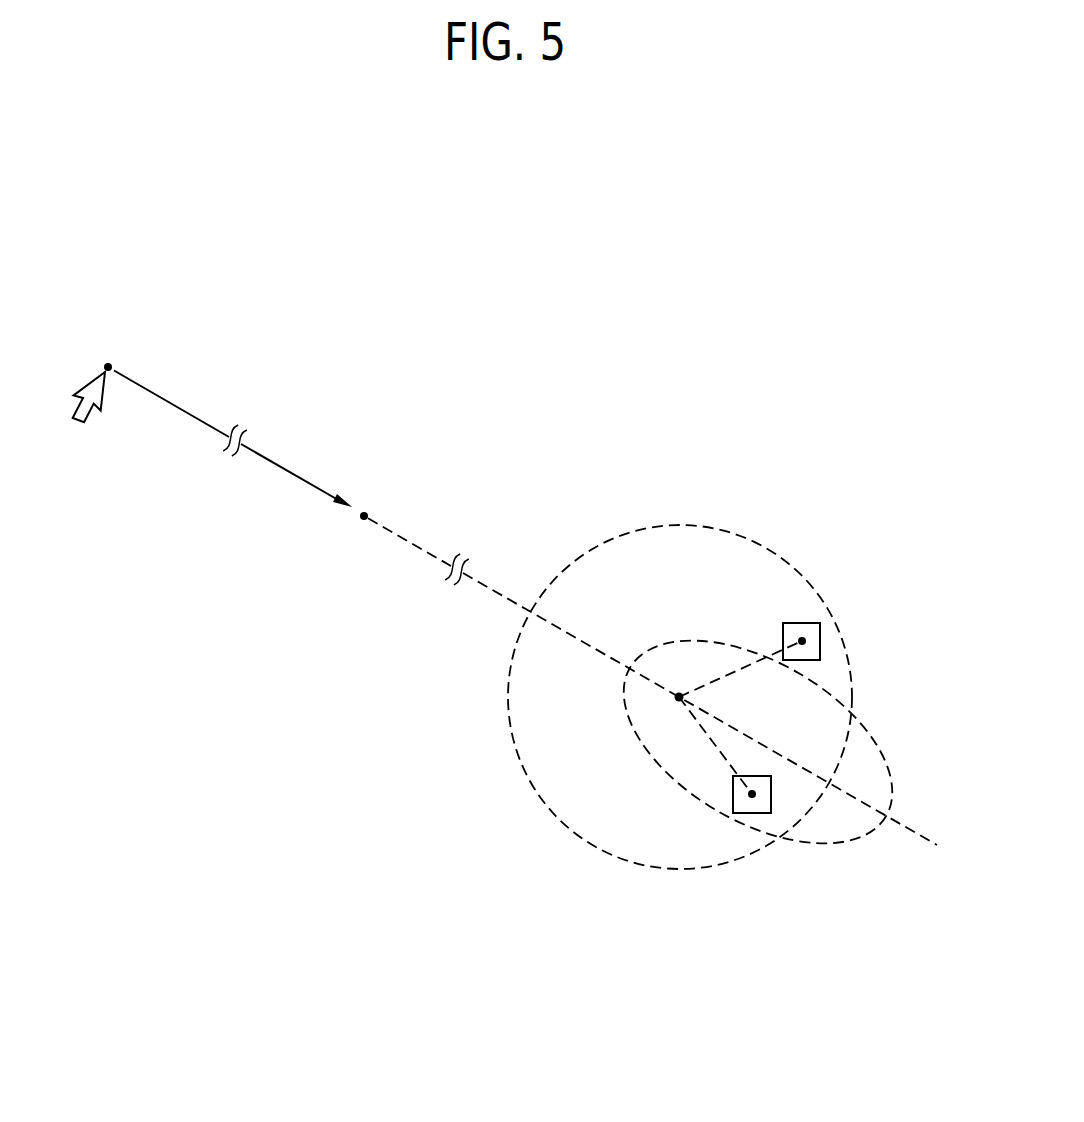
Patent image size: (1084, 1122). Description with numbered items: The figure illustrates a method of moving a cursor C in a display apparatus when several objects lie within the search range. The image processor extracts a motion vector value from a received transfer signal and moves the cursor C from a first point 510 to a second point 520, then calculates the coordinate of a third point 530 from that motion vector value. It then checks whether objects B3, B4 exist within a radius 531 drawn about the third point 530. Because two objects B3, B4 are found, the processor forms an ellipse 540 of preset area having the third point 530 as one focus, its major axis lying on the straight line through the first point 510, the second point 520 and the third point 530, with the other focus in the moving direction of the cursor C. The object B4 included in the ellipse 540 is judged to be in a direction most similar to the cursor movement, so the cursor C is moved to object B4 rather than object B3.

The first point 510 is at (108, 360).
The second point 520 is at (364, 510).
The third point 530 is at (679, 693).
The radius 531 is at (586, 550).
The ellipse 540 is at (830, 845).
The object B3 is at (821, 638).
The object B4 is at (754, 813).
The cursor C is at (81, 424).